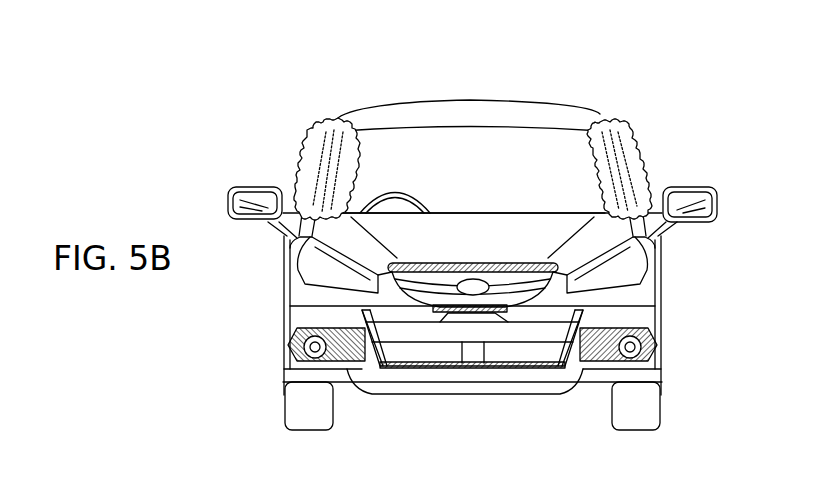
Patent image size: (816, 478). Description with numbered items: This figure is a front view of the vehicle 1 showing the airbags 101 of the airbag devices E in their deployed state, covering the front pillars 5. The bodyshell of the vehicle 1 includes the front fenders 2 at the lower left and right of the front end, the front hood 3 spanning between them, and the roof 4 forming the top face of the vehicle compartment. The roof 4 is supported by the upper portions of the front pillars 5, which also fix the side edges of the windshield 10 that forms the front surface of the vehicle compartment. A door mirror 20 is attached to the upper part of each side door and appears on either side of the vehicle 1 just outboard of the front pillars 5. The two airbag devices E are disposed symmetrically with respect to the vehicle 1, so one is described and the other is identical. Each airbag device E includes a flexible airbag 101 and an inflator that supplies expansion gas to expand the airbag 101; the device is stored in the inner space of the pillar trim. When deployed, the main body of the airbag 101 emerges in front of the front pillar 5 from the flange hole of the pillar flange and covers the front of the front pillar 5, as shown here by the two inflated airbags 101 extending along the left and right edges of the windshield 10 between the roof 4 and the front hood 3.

The vehicle 1 is at (328, 74).
The front fender 2 is at (282, 246).
The front hood 3 is at (437, 250).
The roof 4 is at (508, 115).
The front pillar 5 is at (310, 135).
The windshield 10 is at (391, 152).
The door mirror 20 is at (230, 196).
The airbag 101 is at (297, 165).
The airbag device E is at (310, 151).